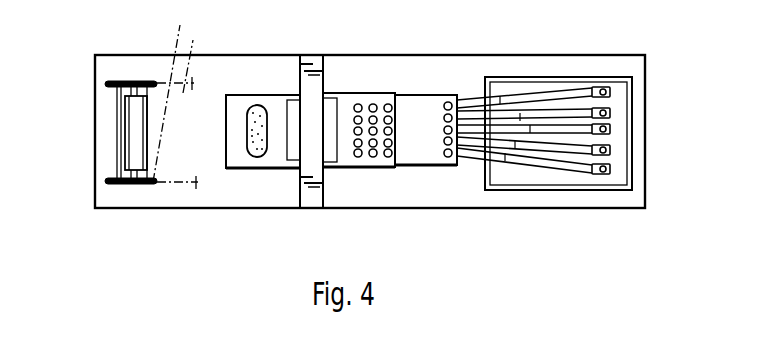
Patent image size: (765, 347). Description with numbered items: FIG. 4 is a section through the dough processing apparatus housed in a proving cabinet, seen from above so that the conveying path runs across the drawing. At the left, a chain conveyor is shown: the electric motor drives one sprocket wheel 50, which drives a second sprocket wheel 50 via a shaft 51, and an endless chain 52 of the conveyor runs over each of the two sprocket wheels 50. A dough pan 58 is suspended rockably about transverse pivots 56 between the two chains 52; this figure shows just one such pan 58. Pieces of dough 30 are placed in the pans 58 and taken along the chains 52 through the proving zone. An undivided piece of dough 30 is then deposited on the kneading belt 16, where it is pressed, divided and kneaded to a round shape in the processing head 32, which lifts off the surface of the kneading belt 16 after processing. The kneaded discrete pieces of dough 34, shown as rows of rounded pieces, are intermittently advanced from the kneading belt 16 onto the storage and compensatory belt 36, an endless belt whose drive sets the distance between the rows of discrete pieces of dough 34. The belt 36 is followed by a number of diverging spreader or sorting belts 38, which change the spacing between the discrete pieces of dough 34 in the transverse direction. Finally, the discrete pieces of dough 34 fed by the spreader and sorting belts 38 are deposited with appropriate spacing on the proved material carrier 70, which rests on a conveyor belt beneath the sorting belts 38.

The kneading belt 16 is at (240, 158).
The piece of dough 30 is at (256, 104).
The processing head 32 is at (328, 92).
The discrete pieces of dough 34 is at (388, 157).
The storage and compensatory belt 36 is at (423, 155).
The spreader or sorting belts 38 is at (568, 113).
The sprocket wheel 50 is at (116, 76).
The shaft 51 is at (123, 163).
The endless chain 52 is at (180, 52).
The transverse pivots 56 is at (132, 84).
The dough pan 58 is at (123, 122).
The proved material carrier 70 is at (508, 82).